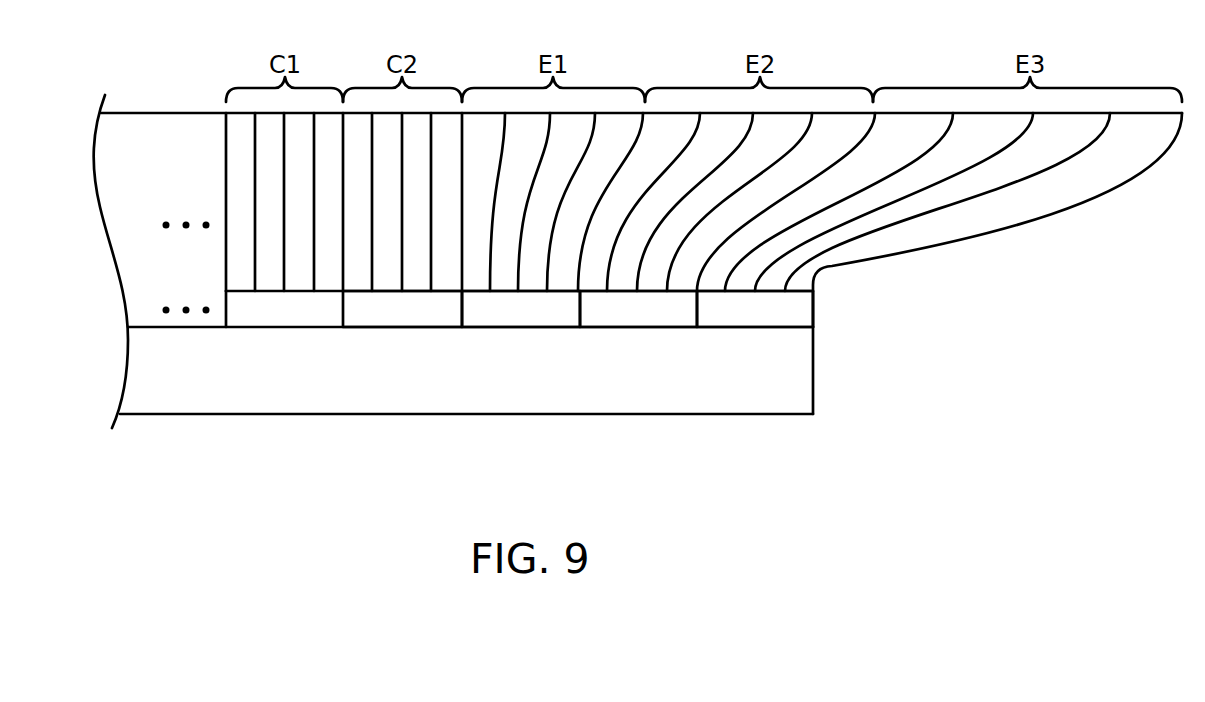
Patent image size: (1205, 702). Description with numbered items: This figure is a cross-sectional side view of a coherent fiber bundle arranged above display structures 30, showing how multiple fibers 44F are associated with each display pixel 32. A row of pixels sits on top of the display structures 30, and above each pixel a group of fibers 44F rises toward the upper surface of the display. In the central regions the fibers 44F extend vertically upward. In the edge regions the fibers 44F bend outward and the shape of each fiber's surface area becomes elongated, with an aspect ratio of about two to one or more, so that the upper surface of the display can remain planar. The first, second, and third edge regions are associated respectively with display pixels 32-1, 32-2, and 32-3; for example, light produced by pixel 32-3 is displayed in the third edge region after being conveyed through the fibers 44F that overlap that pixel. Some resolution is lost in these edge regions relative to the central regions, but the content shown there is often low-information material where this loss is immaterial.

The display structures 30 is at (515, 407).
The display pixel 32 is at (410, 318).
The display pixel 32-1 is at (522, 318).
The display pixel 32-2 is at (627, 318).
The display pixel 32-3 is at (735, 318).
The fibers 44F is at (236, 167).